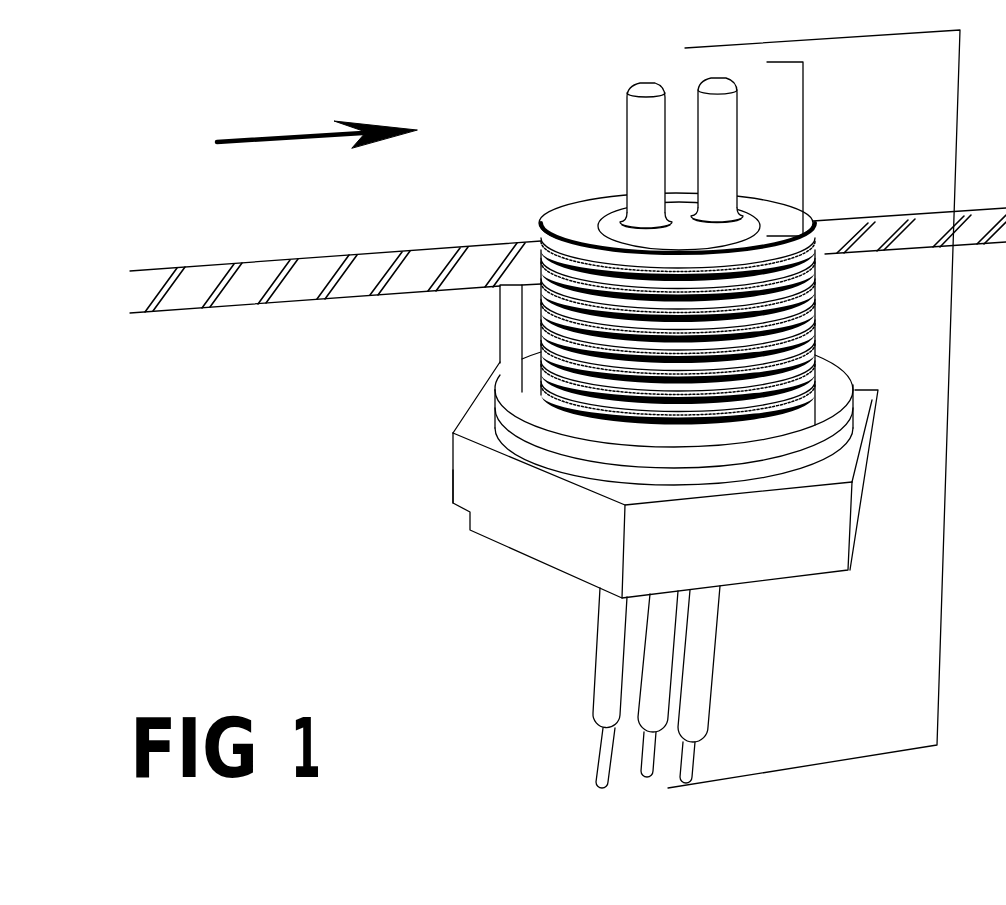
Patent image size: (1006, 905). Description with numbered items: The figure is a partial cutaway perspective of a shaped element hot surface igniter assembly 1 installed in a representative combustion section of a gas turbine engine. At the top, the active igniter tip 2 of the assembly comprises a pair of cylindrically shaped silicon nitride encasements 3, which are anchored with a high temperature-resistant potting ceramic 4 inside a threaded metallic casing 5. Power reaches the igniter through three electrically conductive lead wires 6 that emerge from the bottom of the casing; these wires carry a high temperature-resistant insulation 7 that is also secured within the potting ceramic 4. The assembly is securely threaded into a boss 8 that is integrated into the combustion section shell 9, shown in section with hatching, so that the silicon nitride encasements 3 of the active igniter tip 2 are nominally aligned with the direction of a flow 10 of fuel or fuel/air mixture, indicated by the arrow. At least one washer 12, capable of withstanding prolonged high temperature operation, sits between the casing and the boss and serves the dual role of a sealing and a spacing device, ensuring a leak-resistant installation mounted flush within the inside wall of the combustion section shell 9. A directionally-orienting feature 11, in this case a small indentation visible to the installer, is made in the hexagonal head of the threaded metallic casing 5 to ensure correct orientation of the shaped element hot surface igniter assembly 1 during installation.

The shaped element hot surface igniter assembly 1 is at (947, 380).
The active igniter tip 2 is at (803, 137).
The cylindrically shaped silicon nitride encasements 3 is at (713, 140).
The high temperature-resistant potting ceramic 4 is at (613, 230).
The threaded metallic casing 5 is at (595, 565).
The electrically conductive lead wires 6 is at (698, 762).
The high temperature-resistant insulation 7 is at (698, 680).
The boss 8 is at (510, 328).
The combustion section shell 9 is at (313, 278).
The flow 10 is at (317, 123).
The directionally-orienting feature 11 is at (457, 520).
The washer 12 is at (517, 418).